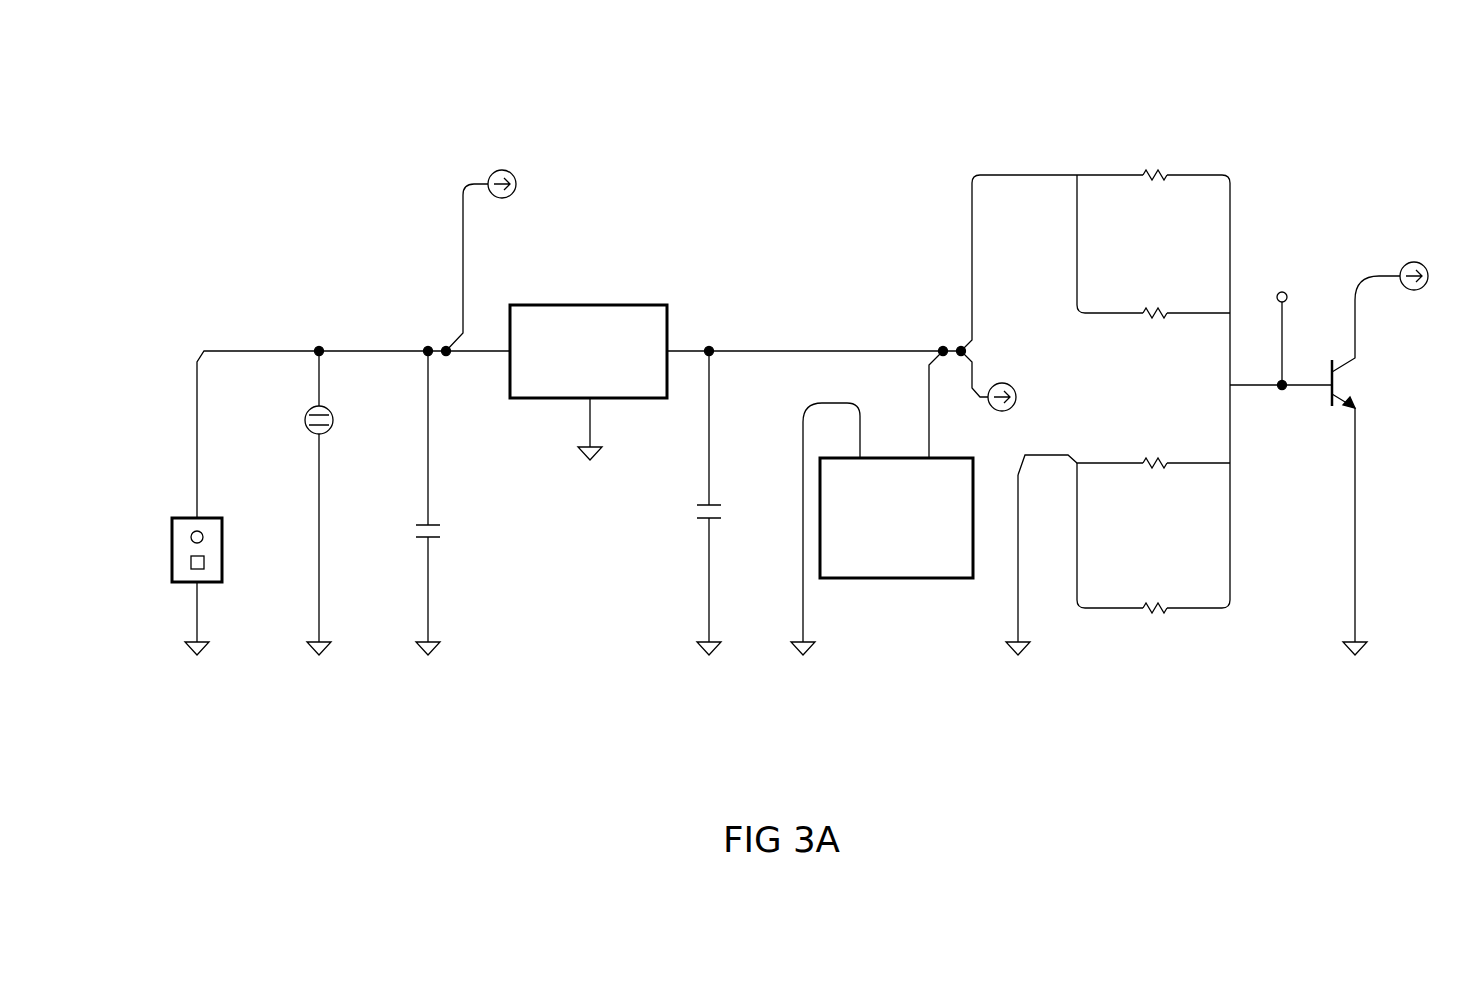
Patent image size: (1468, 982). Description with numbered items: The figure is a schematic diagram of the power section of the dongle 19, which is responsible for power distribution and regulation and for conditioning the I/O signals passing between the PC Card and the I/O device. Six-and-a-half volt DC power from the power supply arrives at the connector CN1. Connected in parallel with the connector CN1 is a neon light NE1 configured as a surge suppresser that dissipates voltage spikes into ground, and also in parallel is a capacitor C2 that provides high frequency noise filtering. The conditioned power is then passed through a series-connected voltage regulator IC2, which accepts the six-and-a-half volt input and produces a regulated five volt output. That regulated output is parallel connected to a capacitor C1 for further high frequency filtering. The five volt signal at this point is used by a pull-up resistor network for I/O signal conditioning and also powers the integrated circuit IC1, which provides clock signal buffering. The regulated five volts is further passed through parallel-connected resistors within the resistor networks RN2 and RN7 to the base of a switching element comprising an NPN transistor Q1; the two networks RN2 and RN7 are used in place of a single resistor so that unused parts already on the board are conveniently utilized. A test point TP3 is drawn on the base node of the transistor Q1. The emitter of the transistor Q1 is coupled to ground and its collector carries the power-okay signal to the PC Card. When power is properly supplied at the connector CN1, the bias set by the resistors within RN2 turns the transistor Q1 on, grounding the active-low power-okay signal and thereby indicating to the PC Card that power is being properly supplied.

The dongle 19 is at (360, 92).
The connector CN1 is at (181, 586).
The neon light NE1 is at (335, 503).
The capacitor C2 is at (433, 503).
The voltage regulator IC2 is at (587, 368).
The capacitor C1 is at (709, 503).
The clock signal buffer IC IC1 is at (882, 503).
The resistor network RN2 is at (1153, 243).
The resistor network RN7 is at (1118, 538).
The test point TP3 is at (1283, 325).
The NPN transistor Q1 is at (1381, 443).